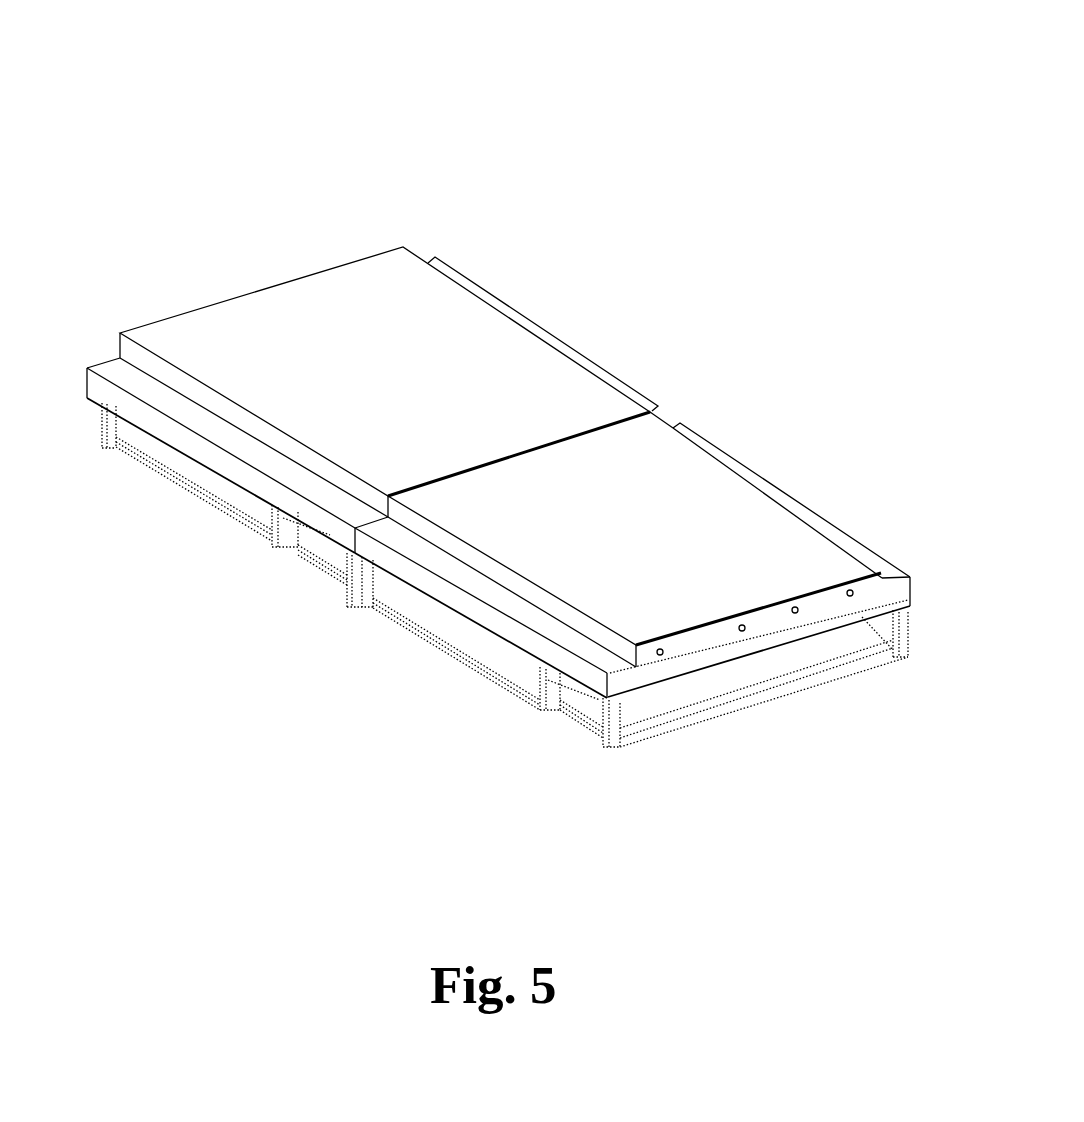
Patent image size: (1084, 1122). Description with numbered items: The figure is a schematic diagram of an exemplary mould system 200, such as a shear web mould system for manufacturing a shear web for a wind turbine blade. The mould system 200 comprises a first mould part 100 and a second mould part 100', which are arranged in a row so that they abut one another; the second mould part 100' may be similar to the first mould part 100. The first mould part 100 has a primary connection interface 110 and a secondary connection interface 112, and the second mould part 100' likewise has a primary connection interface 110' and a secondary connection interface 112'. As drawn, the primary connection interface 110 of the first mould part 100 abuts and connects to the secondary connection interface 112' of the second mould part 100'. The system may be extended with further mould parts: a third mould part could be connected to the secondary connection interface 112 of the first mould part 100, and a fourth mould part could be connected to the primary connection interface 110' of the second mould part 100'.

The mould system 200 is at (498, 385).
The first mould part 100 is at (372, 355).
The primary connection interface 110 is at (385, 382).
The secondary connection interface 112 is at (521, 268).
The second mould part 100' is at (628, 541).
The primary connection interface 110' is at (649, 554).
The secondary connection interface 112' is at (773, 457).